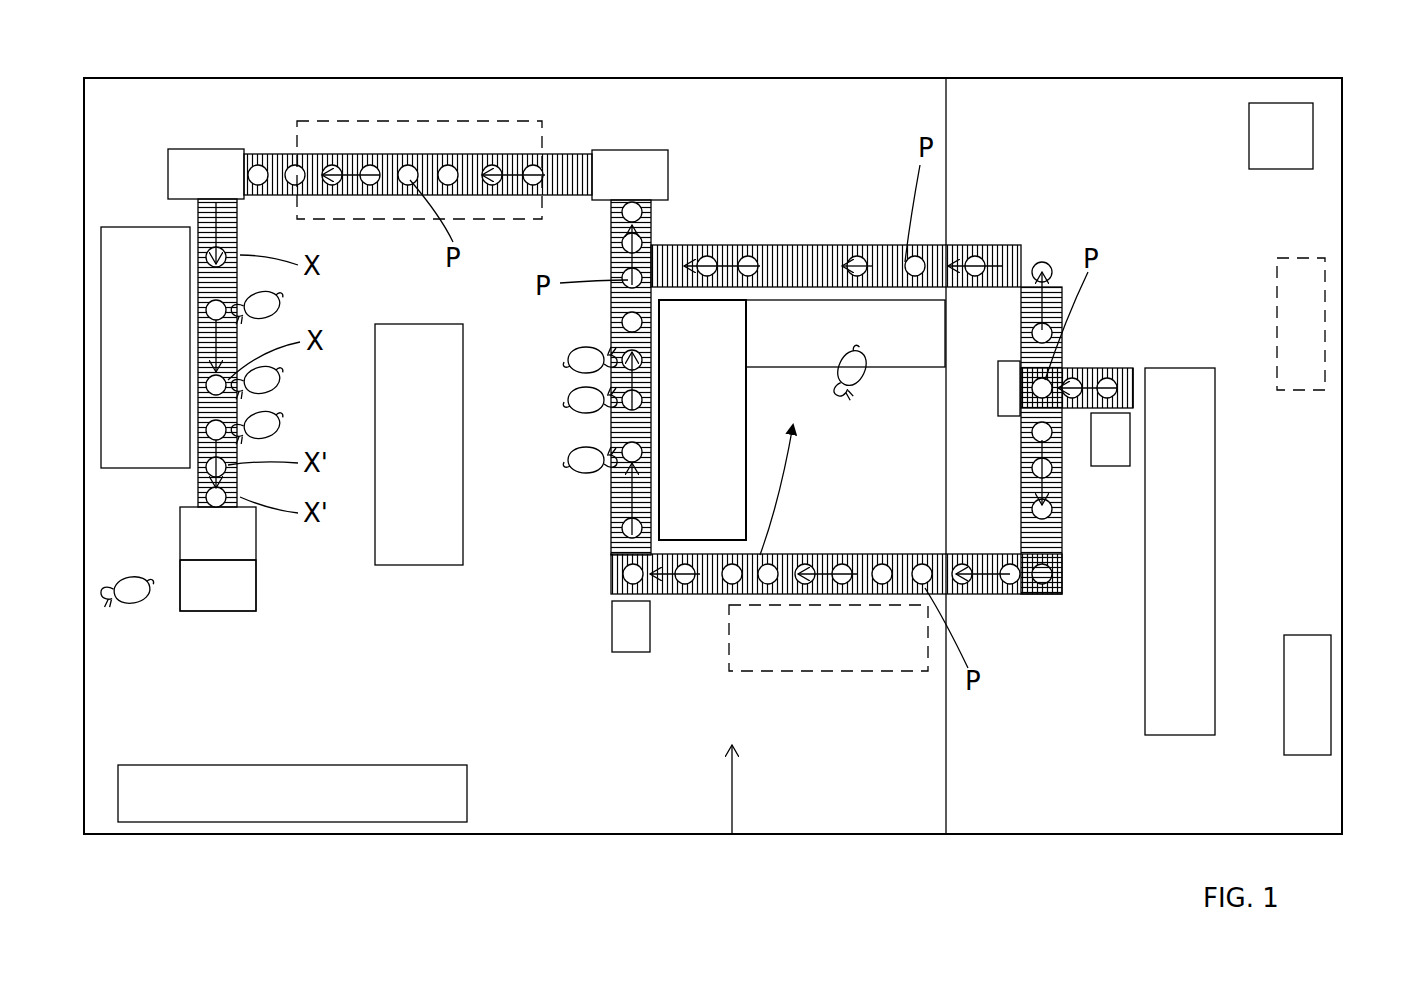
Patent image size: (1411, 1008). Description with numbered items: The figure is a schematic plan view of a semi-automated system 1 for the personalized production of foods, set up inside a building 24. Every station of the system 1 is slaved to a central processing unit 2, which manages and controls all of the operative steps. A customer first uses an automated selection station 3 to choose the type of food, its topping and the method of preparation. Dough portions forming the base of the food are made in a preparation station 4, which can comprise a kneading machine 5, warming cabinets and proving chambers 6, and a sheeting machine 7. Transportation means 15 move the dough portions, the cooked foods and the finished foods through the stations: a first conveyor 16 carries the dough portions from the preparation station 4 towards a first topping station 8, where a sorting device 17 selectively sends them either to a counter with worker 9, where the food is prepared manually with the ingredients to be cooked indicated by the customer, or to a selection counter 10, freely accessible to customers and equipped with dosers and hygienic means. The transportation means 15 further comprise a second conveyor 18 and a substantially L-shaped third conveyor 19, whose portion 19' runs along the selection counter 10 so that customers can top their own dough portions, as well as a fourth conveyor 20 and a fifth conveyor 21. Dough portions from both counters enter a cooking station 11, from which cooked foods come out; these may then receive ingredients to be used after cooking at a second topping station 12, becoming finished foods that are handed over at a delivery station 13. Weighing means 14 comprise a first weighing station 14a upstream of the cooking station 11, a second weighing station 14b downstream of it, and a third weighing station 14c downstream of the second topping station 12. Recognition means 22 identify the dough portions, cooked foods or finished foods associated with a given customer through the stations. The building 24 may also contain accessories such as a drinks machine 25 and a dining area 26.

The system for the personalized production of foods 1 is at (1055, 182).
The central processing unit 2 is at (1323, 312).
The automated selection station 3 is at (840, 672).
The preparation station 4 is at (1105, 725).
The kneading machine 5 is at (1282, 137).
The warming cabinets and proving chambers 6 is at (1300, 697).
The sheeting machine 7 is at (1183, 560).
The first topping station 8 is at (732, 585).
The counter with worker 9 is at (885, 340).
The selection counter 10 is at (718, 355).
The cooking station 11 is at (395, 106).
The second topping station 12 is at (152, 360).
The delivery station 13 is at (225, 590).
The weighing means 14 is at (408, 314).
The first weighing station 14a is at (645, 180).
The second weighing station 14b is at (205, 168).
The third weighing station 14c is at (200, 540).
The transportation means 15 is at (1088, 345).
The first conveyor 16 is at (1125, 390).
The sorting device 17 is at (1005, 385).
The second conveyor 18 is at (795, 262).
The third conveyor 19 is at (836, 610).
The portion of the third conveyor 19' is at (574, 393).
The fourth conveyor 20 is at (566, 150).
The fifth conveyor 21 is at (200, 215).
The recognition means 22 is at (630, 625).
The building 24 is at (888, 78).
The drinks machine 25 is at (438, 535).
The dining area 26 is at (368, 790).